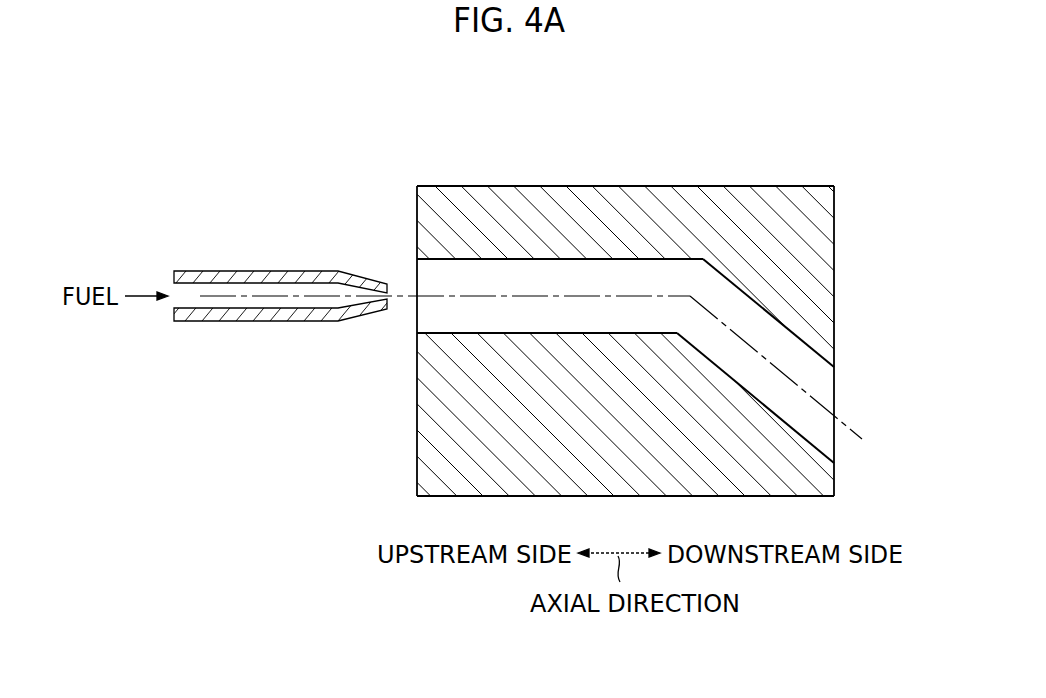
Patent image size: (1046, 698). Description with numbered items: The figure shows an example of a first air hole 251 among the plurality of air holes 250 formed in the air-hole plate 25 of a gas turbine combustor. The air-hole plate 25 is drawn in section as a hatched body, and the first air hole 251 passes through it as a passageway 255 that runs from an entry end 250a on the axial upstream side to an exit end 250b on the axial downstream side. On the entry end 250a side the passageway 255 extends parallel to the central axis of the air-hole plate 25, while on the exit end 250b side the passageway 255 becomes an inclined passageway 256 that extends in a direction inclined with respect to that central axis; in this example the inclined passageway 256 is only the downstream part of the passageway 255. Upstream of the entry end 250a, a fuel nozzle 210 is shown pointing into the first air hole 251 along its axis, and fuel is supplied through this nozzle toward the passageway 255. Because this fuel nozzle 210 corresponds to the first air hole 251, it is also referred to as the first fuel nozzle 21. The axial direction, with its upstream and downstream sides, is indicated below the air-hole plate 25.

The first fuel nozzle 21 is at (296, 256).
The fuel nozzle 210 is at (272, 262).
The air-hole plate 25 is at (643, 315).
The air hole 250 is at (625, 315).
The first air hole 251 is at (657, 248).
The passageway 255 is at (676, 300).
The inclined passageway 256 is at (795, 352).
The entry end 250a is at (417, 278).
The exit end 250b is at (834, 394).